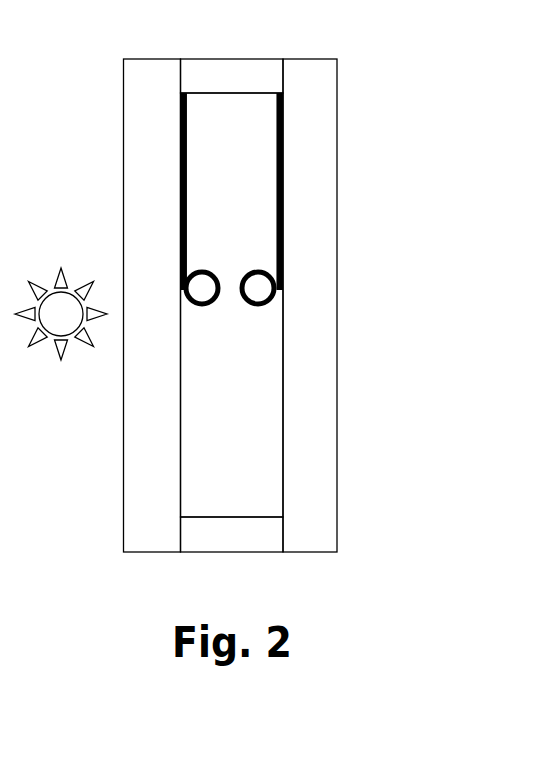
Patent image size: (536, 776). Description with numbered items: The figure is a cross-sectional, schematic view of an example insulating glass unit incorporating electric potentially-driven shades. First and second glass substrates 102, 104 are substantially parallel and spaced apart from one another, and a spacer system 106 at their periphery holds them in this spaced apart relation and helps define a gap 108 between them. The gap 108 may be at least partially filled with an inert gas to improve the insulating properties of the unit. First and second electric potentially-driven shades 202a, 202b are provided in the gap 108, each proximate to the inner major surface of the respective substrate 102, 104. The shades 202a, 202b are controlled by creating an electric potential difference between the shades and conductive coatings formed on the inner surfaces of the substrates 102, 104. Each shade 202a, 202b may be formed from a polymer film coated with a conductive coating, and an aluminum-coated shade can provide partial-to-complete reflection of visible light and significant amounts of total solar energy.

The first substrate 102 is at (124, 125).
The second substrate 104 is at (337, 124).
The spacer system 106 is at (230, 59).
The gap 108 is at (248, 418).
The first electric potentially-driven shade 202a is at (202, 306).
The second electric potentially-driven shade 202b is at (260, 306).